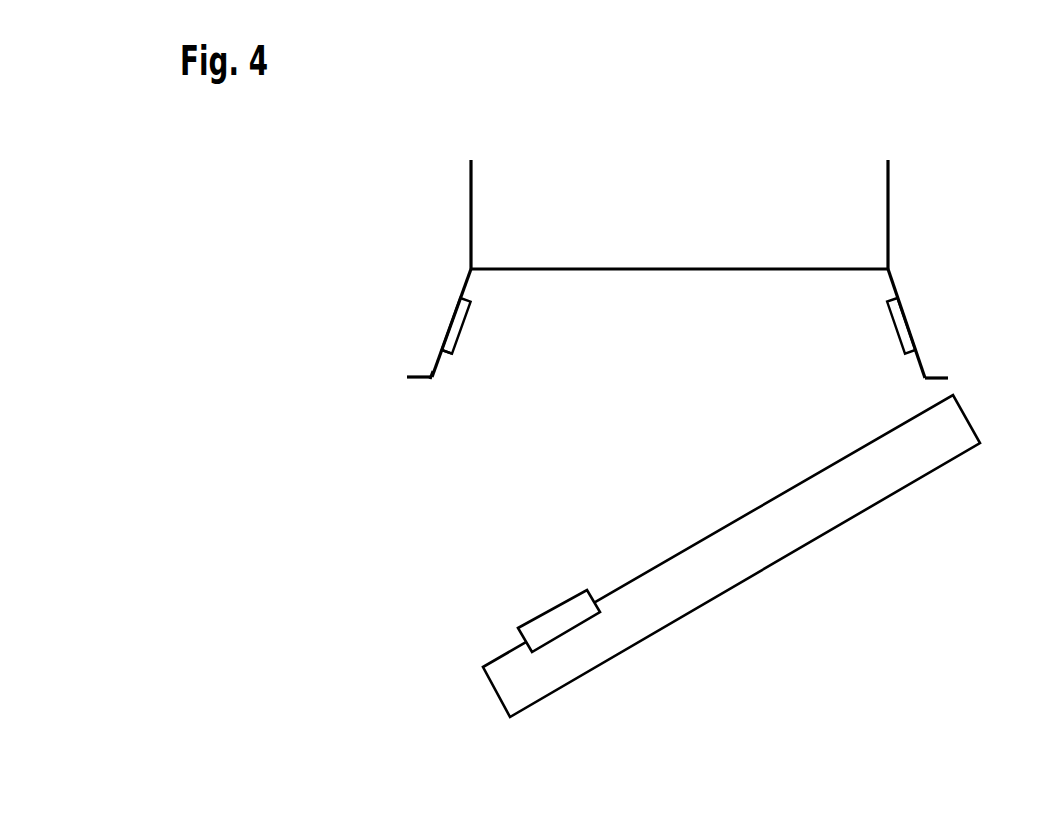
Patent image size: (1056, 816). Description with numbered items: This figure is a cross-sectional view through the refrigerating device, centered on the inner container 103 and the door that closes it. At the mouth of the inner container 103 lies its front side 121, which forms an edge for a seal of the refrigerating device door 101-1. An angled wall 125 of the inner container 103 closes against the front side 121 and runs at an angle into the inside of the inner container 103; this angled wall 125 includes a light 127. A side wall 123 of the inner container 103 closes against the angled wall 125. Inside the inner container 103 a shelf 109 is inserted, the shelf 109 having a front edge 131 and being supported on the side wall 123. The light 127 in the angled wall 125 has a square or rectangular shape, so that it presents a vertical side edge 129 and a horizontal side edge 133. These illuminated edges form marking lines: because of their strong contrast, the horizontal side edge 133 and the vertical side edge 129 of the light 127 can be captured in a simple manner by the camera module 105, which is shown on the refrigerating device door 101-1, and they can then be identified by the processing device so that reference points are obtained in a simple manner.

The shelf 109 is at (617, 193).
The front edge 131 is at (768, 269).
The side wall 123 is at (470, 218).
The inner container 103 is at (889, 211).
The horizontal side edge 133 is at (461, 335).
The front side 121 is at (416, 380).
The angled wall 125 is at (439, 374).
The light 127 is at (462, 316).
The vertical side edge 129 is at (446, 352).
The refrigerating device door 101-1 is at (760, 535).
The camera module 105 is at (570, 632).